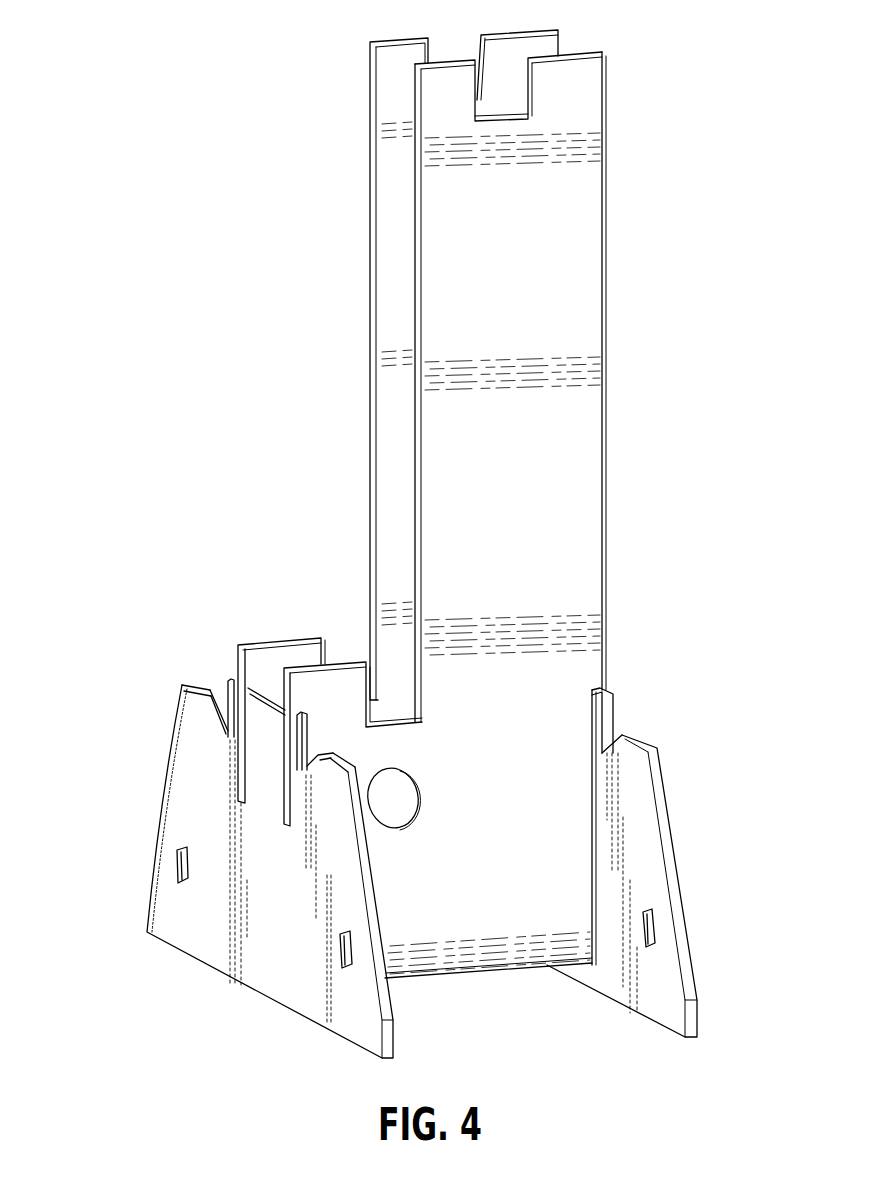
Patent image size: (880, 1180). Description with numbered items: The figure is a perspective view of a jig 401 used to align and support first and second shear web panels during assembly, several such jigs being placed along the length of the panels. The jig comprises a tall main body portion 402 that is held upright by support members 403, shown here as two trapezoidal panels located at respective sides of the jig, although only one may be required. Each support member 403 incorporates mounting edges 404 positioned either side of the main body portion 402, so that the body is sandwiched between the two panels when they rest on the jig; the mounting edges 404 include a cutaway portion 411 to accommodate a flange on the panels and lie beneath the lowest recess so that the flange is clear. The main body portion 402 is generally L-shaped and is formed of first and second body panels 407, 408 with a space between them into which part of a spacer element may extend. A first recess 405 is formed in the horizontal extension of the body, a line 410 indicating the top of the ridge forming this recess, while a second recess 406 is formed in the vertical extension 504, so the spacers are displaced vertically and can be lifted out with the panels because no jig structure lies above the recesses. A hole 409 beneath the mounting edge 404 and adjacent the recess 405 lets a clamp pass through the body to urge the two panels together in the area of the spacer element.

The jig 401 is at (99, 282).
The main body portion 402 is at (624, 230).
The support member 403 is at (144, 911).
The mounting edge 404 is at (207, 691).
The first recess 405 is at (393, 718).
The second recess 406 is at (503, 118).
The first body panel 407 is at (604, 323).
The second body panel 408 is at (369, 313).
The hole 409 is at (411, 794).
The top of the ridge 410 is at (312, 667).
The cutaway portion 411 is at (226, 698).
The vertical extension 504 is at (534, 337).